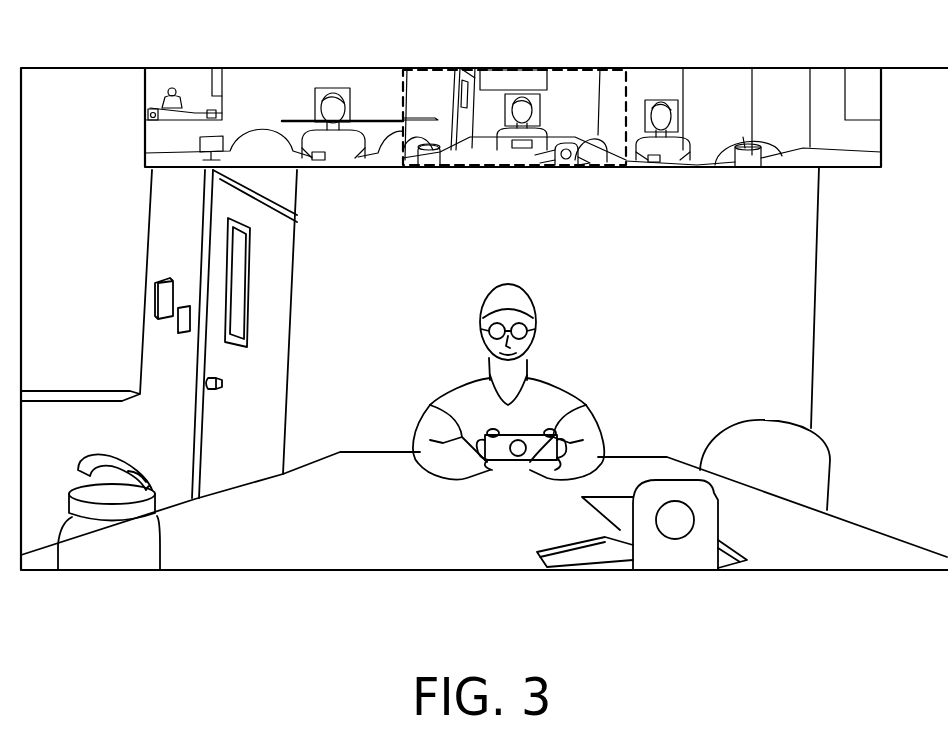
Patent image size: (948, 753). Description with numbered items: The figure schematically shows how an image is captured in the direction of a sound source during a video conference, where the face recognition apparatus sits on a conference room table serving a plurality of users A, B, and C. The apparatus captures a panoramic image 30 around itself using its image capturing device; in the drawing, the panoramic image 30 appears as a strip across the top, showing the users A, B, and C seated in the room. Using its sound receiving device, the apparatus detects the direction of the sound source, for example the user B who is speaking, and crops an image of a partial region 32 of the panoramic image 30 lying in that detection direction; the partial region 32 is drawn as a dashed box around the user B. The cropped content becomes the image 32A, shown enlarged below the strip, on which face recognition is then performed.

The panoramic image 30 is at (883, 90).
The partial region 32 is at (628, 88).
The image 32A is at (785, 571).
The user A is at (345, 90).
The user B is at (530, 93).
The user C is at (678, 117).